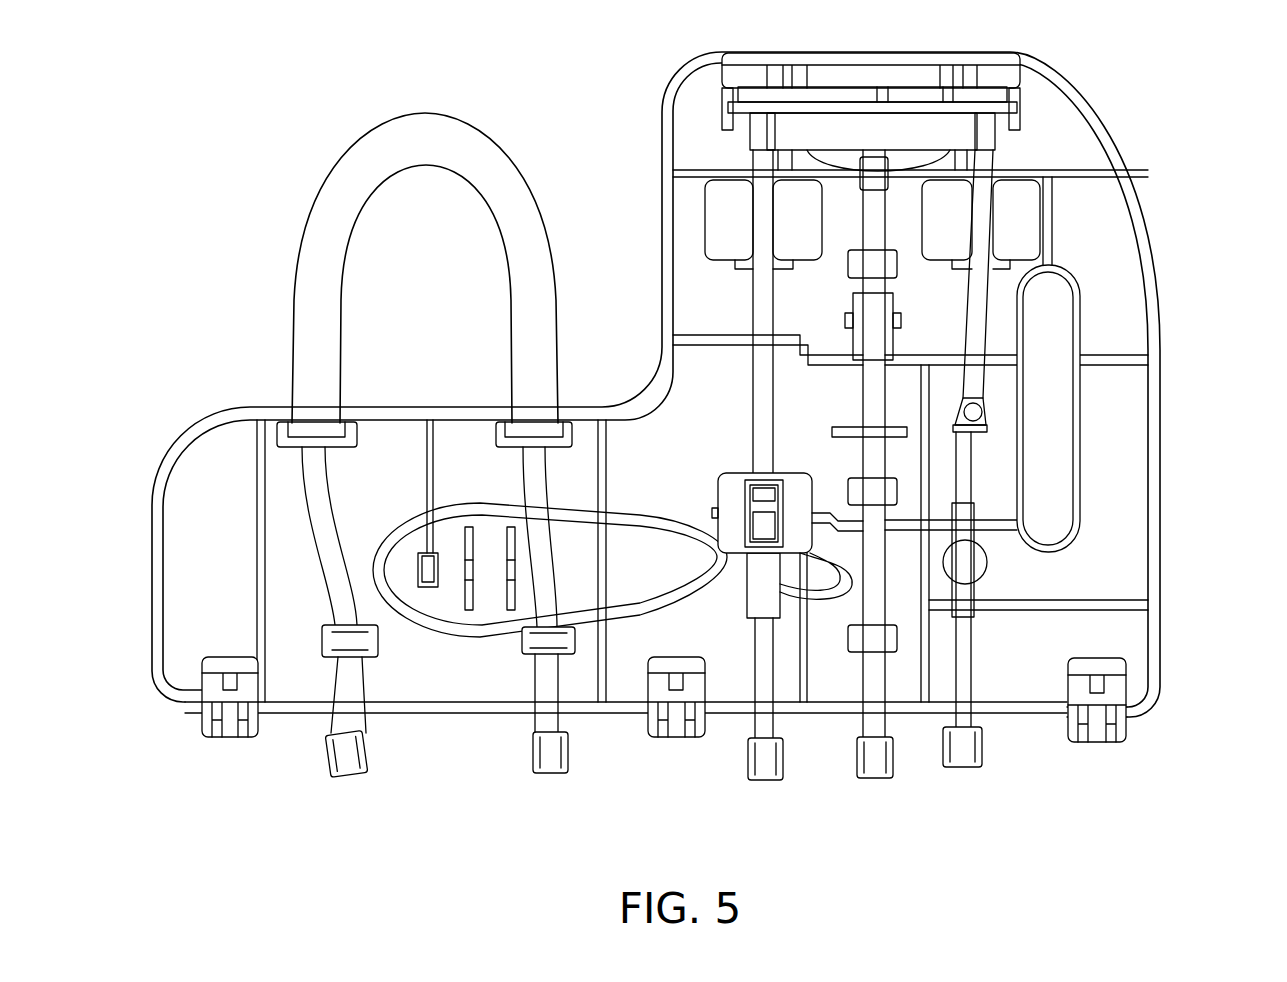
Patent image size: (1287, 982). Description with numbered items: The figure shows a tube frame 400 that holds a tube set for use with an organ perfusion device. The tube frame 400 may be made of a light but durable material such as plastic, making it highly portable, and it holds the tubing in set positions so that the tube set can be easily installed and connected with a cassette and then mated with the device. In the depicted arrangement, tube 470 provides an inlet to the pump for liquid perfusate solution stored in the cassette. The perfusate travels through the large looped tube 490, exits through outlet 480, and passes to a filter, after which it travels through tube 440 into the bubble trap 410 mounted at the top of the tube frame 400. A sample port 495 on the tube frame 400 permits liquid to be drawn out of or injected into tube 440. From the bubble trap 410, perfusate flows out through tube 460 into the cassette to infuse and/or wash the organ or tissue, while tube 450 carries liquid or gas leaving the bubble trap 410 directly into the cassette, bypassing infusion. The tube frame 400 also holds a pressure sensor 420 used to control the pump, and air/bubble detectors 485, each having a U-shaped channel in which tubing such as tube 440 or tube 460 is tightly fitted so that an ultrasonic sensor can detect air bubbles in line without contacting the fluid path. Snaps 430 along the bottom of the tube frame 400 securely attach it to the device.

The tube frame 400 is at (1162, 550).
The bubble trap 410 is at (922, 135).
The pressure sensor 420 is at (718, 478).
The snaps 430 is at (218, 737).
The tube 440 is at (963, 768).
The tube 450 is at (874, 778).
The tube 460 is at (765, 780).
The tube 470 is at (548, 774).
The outlet 480 is at (342, 777).
The air/bubble detector 485 is at (720, 205).
The tube 490 is at (367, 138).
The sample port 495 is at (985, 420).